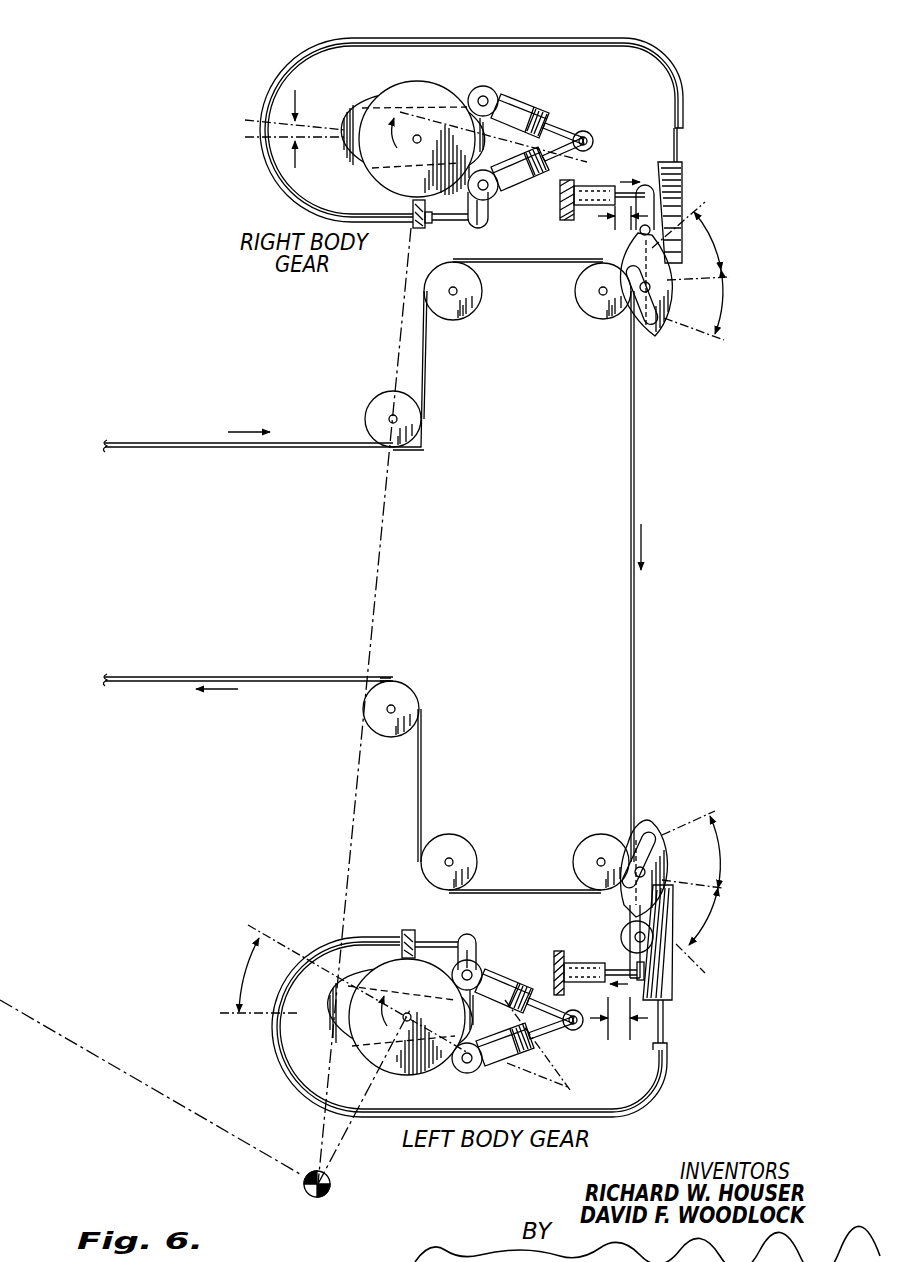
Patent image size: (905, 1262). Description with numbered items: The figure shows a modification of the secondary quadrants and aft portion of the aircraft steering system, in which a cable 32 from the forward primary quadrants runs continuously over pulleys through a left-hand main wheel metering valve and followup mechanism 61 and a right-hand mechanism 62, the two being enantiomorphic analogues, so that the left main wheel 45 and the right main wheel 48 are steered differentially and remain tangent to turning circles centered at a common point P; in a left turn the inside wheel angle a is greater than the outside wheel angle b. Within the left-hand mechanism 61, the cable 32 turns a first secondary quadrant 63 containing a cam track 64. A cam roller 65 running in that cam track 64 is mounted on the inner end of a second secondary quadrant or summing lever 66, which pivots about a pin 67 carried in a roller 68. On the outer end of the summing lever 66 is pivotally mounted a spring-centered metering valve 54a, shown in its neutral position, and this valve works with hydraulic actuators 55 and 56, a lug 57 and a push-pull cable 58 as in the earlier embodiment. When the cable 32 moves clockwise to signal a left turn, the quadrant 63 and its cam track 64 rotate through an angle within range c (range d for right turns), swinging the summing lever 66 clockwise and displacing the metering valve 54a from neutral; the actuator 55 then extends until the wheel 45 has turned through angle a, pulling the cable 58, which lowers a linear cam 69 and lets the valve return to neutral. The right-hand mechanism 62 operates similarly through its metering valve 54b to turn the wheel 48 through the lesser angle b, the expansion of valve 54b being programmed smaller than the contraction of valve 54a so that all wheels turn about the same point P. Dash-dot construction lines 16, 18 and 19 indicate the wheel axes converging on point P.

The axis line through pivot point 16 is at (80, 1046).
The axis line of left body gear 18 is at (338, 1149).
The axis line of gear assembly 19 is at (352, 805).
The cable 32 is at (148, 441).
The left main wheel 45 is at (328, 1018).
The right main wheel 48 is at (347, 145).
The metering valve 54a is at (580, 957).
The metering valve 54b is at (592, 186).
The hydraulic actuator 55 is at (498, 976).
The hydraulic actuator 56 is at (510, 1062).
The lug 57 is at (480, 949).
The push-pull cable 58 is at (456, 939).
The left main wheel metering valve and followup mechanism 61 is at (677, 890).
The right main wheel metering valve and followup mechanism 62 is at (700, 68).
The first secondary quadrant 63 is at (650, 824).
The cam track 64 is at (630, 840).
The cam roller 65 is at (641, 868).
The second secondary quadrant or summing lever 66 is at (633, 925).
The pin 67 is at (618, 939).
The roller 68 is at (634, 940).
The linear cam 69 is at (676, 995).
The point P is at (333, 1182).